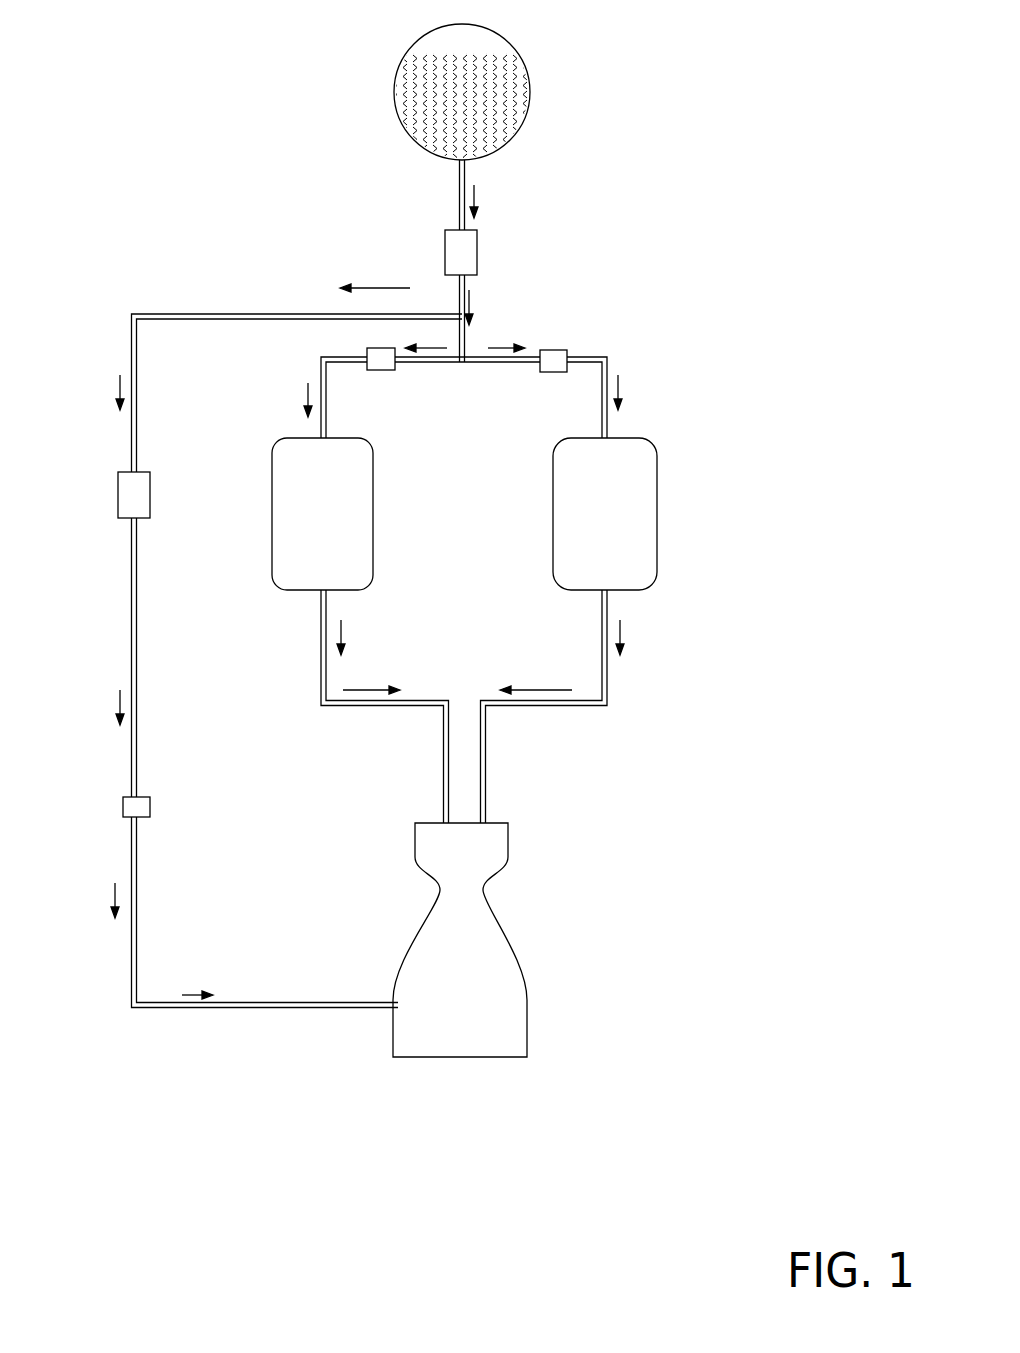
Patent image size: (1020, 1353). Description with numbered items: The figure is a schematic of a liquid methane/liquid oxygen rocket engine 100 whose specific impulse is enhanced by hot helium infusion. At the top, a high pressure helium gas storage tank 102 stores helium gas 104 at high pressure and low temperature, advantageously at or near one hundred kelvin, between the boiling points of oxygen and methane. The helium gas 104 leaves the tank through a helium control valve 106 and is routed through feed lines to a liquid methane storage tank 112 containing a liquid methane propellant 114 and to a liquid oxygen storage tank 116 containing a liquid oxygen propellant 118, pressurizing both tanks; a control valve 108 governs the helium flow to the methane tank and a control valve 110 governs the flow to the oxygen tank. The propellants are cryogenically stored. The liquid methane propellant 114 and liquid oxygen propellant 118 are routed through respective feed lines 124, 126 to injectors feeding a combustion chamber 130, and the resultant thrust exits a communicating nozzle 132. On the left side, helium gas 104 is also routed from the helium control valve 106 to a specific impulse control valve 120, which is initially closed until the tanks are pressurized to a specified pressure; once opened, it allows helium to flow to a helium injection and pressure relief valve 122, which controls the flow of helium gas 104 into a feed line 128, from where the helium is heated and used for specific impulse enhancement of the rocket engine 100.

The rocket engine 100 is at (155, 78).
The helium gas storage tank 102 is at (514, 50).
The helium gas 104 is at (402, 105).
The helium control valve 106 is at (478, 252).
The control valve 108 is at (391, 368).
The control valve 110 is at (566, 352).
The liquid methane storage tank 112 is at (373, 448).
The liquid methane propellant 114 is at (290, 548).
The liquid oxygen storage tank 116 is at (657, 448).
The liquid oxygen propellant 118 is at (640, 550).
The specific impulse control valve 120 is at (150, 480).
The helium injection and pressure relief valve 122 is at (123, 806).
The feed line 124 is at (443, 800).
The feed line 126 is at (485, 802).
The feed line 128 is at (325, 1002).
The combustion chamber 130 is at (508, 856).
The nozzle 132 is at (520, 982).